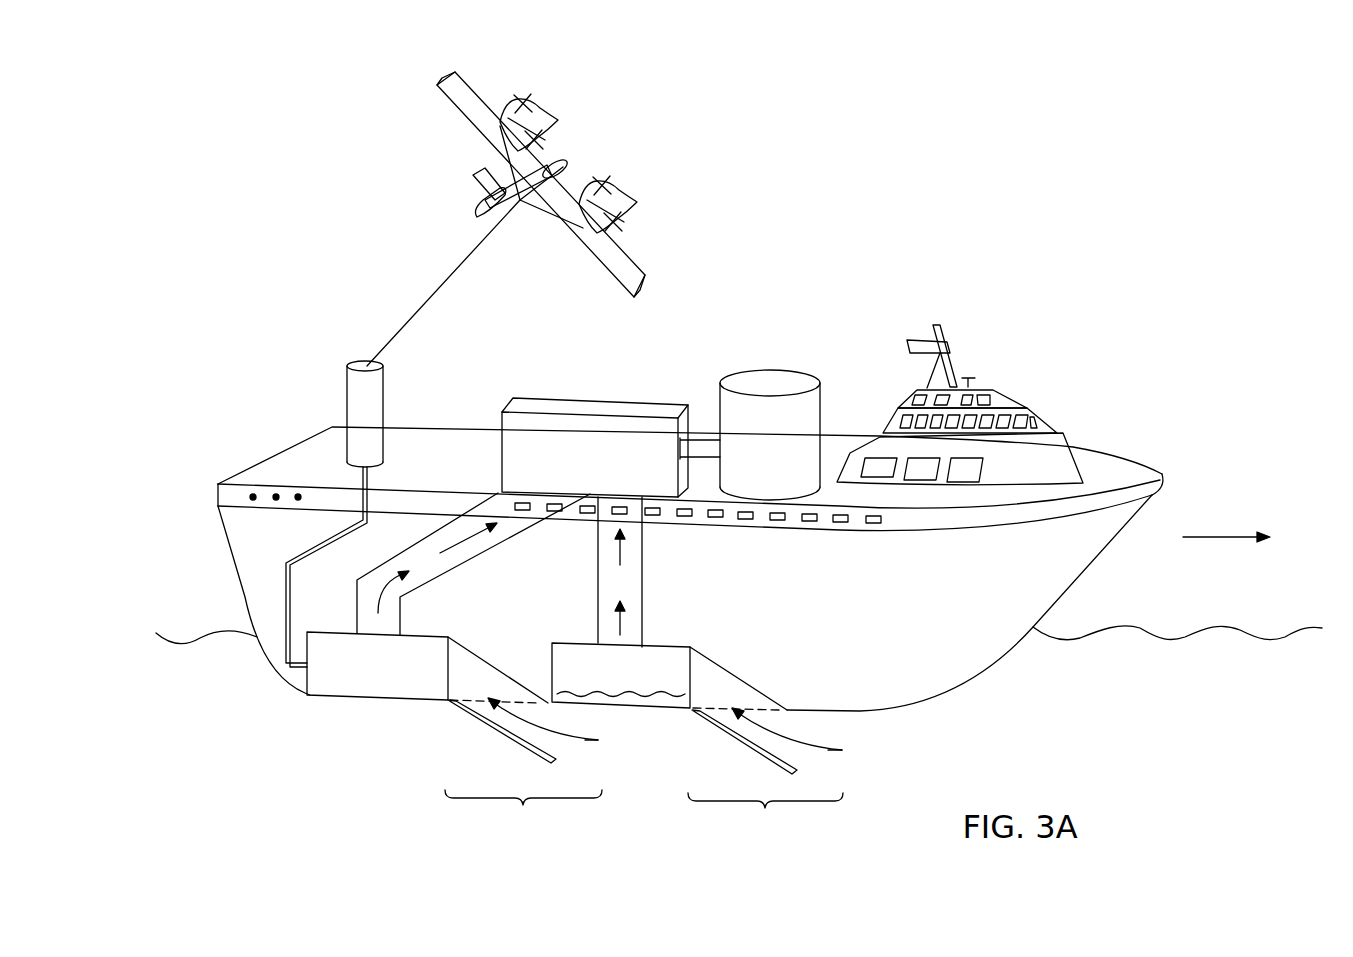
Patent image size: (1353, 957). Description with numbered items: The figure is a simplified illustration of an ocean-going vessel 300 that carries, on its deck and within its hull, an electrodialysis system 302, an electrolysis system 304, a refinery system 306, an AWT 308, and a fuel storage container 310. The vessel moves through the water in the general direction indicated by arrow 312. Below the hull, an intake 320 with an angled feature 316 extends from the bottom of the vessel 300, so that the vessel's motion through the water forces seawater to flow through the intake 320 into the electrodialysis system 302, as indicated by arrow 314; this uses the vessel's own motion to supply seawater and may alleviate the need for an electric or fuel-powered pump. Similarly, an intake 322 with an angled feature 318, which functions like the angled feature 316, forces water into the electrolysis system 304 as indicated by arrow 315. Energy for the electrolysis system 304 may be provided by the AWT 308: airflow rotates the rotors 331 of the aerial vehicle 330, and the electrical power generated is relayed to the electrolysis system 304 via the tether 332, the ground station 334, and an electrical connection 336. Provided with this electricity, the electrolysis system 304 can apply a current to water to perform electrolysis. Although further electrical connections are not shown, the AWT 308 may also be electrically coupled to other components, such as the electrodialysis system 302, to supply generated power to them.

The ocean-going vessel 300 is at (1114, 371).
The electrodialysis system 302 is at (665, 643).
The electrolysis system 304 is at (430, 632).
The refinery system 306 is at (598, 410).
The AWT 308 is at (320, 350).
The fuel storage container 310 is at (770, 382).
The arrow 312 is at (1222, 537).
The arrow 314 is at (827, 752).
The arrow 315 is at (583, 742).
The angled feature 316 is at (735, 742).
The angled feature 318 is at (492, 732).
The intake 320 is at (765, 817).
The intake 322 is at (523, 814).
The aerial vehicle 330 is at (551, 184).
The rotors 331 is at (555, 117).
The tether 332 is at (442, 280).
The ground station 334 is at (385, 392).
The electrical connection 336 is at (300, 553).